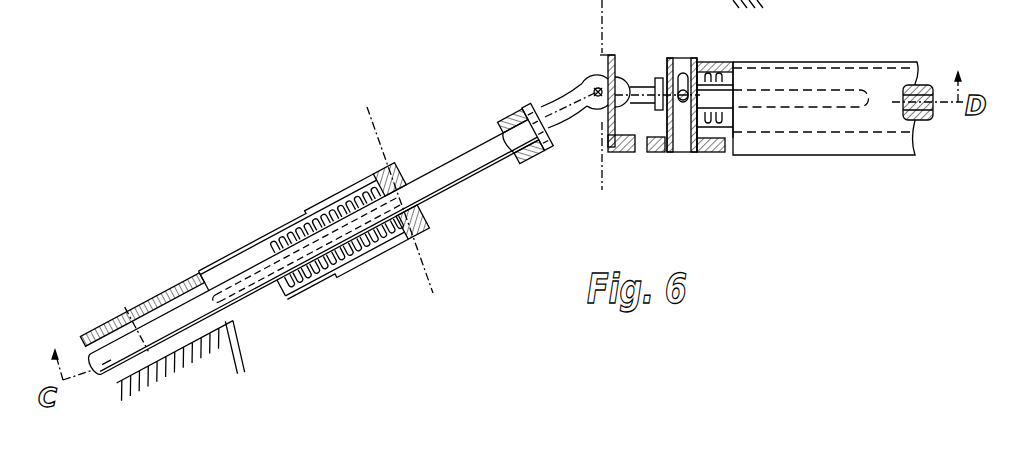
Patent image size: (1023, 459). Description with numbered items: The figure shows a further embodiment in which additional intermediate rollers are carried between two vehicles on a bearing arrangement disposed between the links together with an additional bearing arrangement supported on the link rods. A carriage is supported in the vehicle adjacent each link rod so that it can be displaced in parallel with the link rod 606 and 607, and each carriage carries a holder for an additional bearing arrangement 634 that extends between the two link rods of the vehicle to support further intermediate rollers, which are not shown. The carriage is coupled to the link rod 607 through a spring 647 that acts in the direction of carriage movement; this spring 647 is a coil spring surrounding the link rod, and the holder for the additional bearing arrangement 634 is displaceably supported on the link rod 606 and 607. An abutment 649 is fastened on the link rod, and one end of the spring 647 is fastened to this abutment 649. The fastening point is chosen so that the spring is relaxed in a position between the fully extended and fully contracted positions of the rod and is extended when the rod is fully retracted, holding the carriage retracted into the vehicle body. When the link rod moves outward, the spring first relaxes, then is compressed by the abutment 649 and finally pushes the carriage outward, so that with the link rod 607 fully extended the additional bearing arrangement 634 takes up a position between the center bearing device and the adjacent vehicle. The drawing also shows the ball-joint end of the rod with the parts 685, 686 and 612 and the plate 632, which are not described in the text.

The link rod 606 is at (920, 120).
The link rod 607 is at (448, 160).
The ball joint socket 612 is at (595, 112).
The plate 632 is at (613, 152).
The additional bearing arrangement 634 is at (670, 60).
The spring 647 is at (365, 250).
The abutment 649 is at (272, 267).
The ball 685 is at (595, 74).
The pin 686 is at (686, 75).